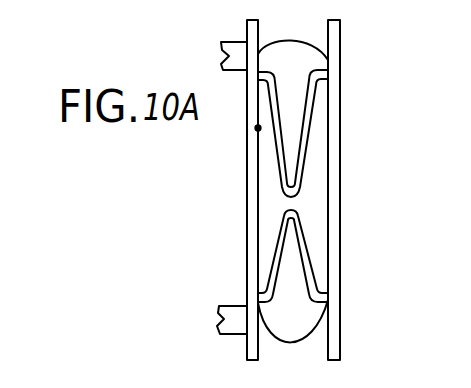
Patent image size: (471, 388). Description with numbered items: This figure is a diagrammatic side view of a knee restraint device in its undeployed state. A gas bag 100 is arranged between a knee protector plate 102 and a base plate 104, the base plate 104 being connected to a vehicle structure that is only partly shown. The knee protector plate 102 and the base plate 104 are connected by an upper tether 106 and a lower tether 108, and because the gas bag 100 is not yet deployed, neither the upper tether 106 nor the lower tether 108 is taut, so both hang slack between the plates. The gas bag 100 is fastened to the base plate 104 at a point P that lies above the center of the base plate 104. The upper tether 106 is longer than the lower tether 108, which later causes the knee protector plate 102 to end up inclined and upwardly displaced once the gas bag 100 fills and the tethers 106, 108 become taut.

The gas bag 100 is at (310, 67).
The knee protector plate 102 is at (333, 118).
The base plate 104 is at (247, 183).
The upper tether 106 is at (303, 163).
The lower tether 108 is at (310, 268).
The fastening point P is at (257, 129).